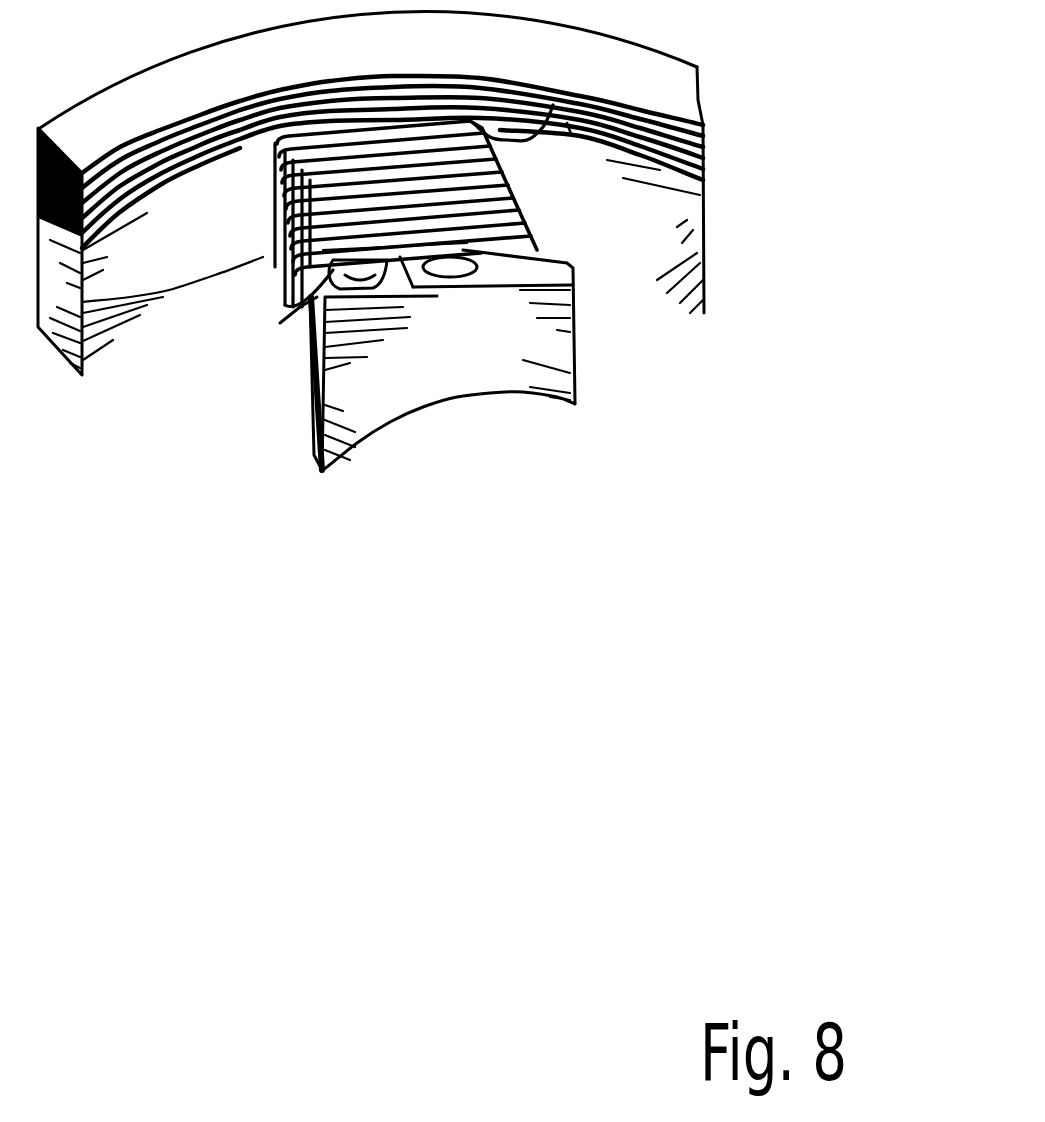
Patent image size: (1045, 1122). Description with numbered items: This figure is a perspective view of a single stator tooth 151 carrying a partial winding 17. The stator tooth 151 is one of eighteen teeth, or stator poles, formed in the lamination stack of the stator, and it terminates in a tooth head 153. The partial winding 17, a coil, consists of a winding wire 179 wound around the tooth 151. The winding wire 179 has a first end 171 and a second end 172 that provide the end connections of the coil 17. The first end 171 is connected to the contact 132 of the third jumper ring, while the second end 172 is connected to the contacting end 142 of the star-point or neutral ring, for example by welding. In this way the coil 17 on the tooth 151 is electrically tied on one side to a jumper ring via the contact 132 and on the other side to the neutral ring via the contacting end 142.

The partial winding 17 is at (520, 232).
The contact of third jumper ring 132 is at (703, 100).
The first end 171 is at (527, 140).
The tooth head 153 is at (575, 405).
The second end 172 is at (483, 283).
The contacting end of star-point ring 142 is at (437, 297).
The stator tooth 151 is at (277, 203).
The winding wire 179 is at (260, 297).